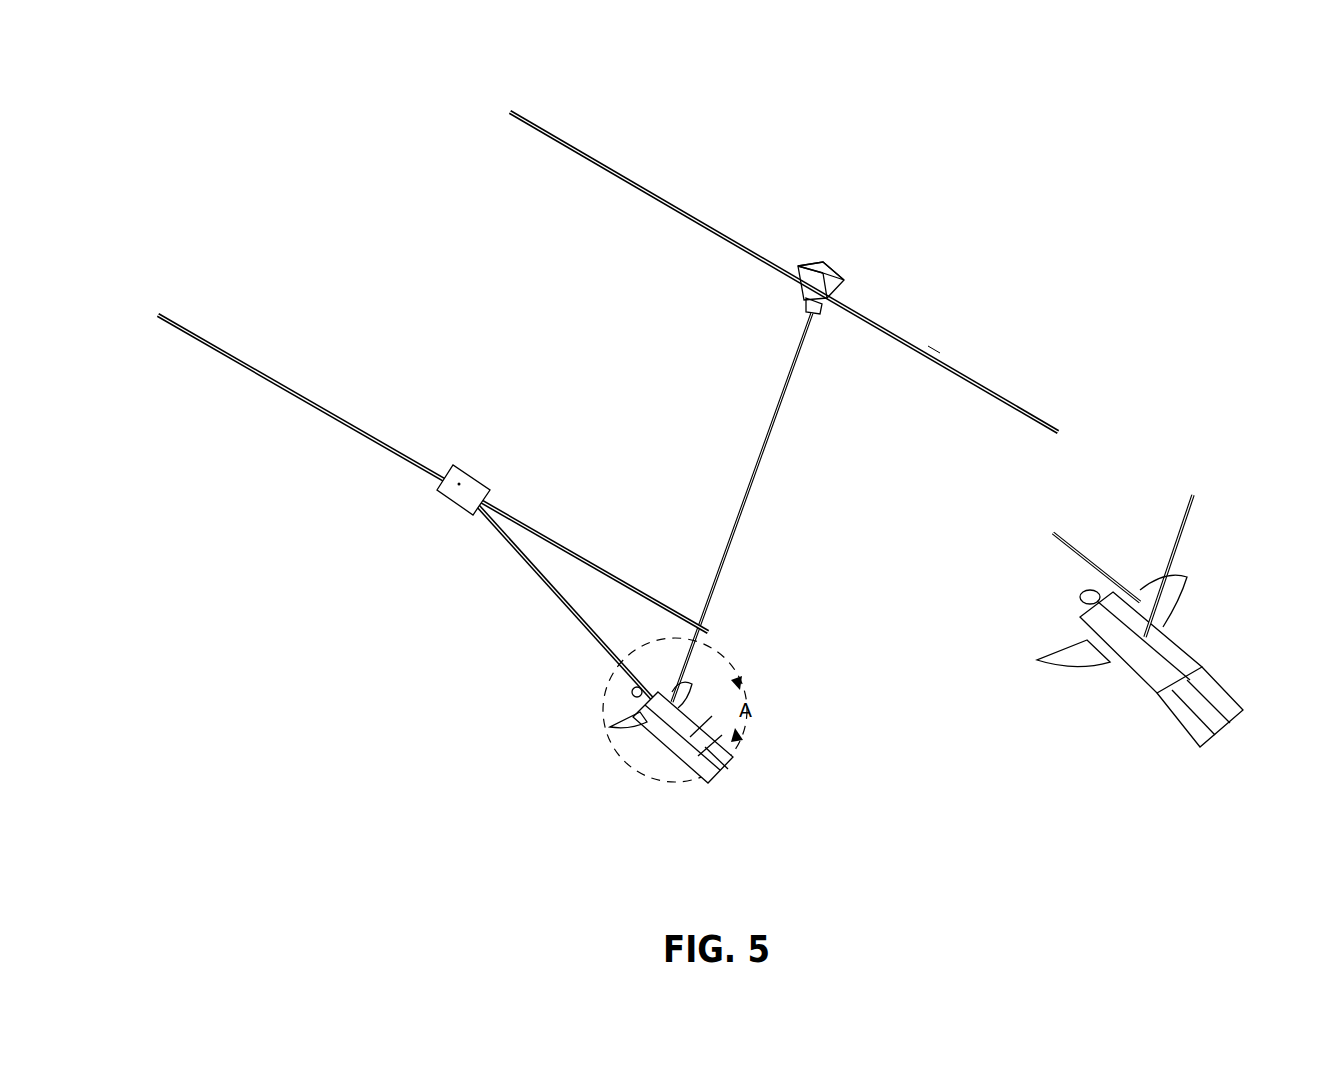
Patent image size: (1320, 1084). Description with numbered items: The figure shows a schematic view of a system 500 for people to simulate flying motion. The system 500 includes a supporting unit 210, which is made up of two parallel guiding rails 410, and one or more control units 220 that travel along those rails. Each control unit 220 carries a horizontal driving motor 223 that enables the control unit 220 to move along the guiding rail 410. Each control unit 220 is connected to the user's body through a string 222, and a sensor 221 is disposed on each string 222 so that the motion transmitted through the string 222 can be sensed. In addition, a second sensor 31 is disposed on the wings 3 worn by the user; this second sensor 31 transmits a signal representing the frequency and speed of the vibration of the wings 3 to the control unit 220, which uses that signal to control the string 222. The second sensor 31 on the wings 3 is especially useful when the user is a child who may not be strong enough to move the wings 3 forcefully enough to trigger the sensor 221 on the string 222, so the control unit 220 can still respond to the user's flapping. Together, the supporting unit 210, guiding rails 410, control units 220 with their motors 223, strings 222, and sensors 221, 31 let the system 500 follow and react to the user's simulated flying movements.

The supporting unit 210 is at (590, 134).
The control unit 220 is at (789, 203).
The horizontal driving motor 223 is at (895, 220).
The guiding rail 410 is at (1030, 261).
The string 222 is at (832, 507).
The system for people to simulate flying motion 500 is at (316, 516).
The sensor 221 is at (772, 752).
The second sensor 31 is at (637, 715).
The wings 3 is at (1090, 621).